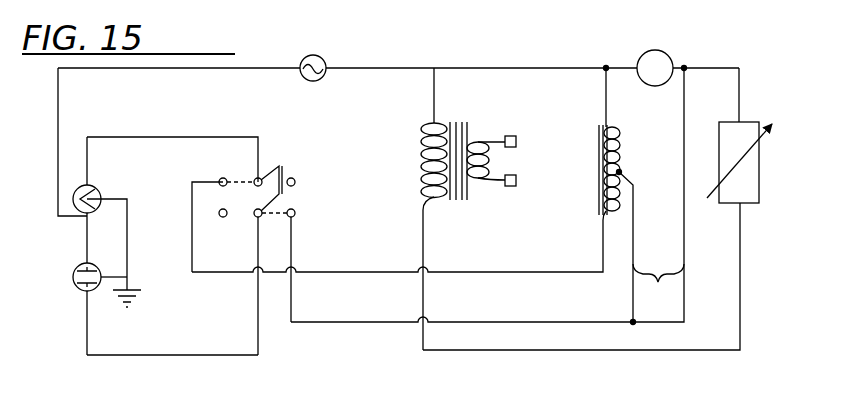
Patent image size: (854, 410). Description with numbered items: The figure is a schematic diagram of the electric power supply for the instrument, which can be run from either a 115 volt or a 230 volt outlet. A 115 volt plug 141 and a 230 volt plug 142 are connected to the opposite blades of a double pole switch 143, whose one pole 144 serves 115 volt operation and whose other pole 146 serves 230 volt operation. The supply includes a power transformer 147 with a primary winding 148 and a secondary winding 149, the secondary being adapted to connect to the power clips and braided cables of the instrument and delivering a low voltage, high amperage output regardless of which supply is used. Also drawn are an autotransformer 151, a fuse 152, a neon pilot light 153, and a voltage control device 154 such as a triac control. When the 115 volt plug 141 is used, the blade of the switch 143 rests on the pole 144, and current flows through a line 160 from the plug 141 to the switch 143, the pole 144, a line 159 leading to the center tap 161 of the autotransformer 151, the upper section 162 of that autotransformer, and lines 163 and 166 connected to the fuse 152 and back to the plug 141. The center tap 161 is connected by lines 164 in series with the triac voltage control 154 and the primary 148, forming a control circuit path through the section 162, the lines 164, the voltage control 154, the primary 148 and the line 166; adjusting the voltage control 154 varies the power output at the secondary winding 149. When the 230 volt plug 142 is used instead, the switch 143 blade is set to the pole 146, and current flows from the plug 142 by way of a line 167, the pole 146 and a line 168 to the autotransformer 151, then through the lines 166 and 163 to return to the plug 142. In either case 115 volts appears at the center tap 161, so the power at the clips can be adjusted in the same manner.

The 115 volt plug 141 is at (74, 284).
The 230 volt plug 142 is at (86, 184).
The double pole switch 143 is at (271, 161).
The pole 144 is at (295, 210).
The pole 146 is at (271, 233).
The power transformer 147 is at (450, 206).
The primary winding 148 is at (422, 158).
The secondary winding 149 is at (480, 142).
The autotransformer 151 is at (591, 211).
The fuse 152 is at (323, 58).
The neon pilot light 153 is at (668, 52).
The voltage control device 154 is at (750, 122).
The line 159 is at (332, 322).
The line 160 is at (223, 355).
The center tap 161 is at (634, 186).
The upper section 162 is at (603, 133).
The line 163 is at (258, 66).
The lines 164 is at (658, 288).
The line 166 is at (509, 68).
The line 167 is at (165, 138).
The line 168 is at (337, 272).
The 115 volt terminal 115 is at (648, 120).
The 230 volt terminal 230 is at (375, 184).